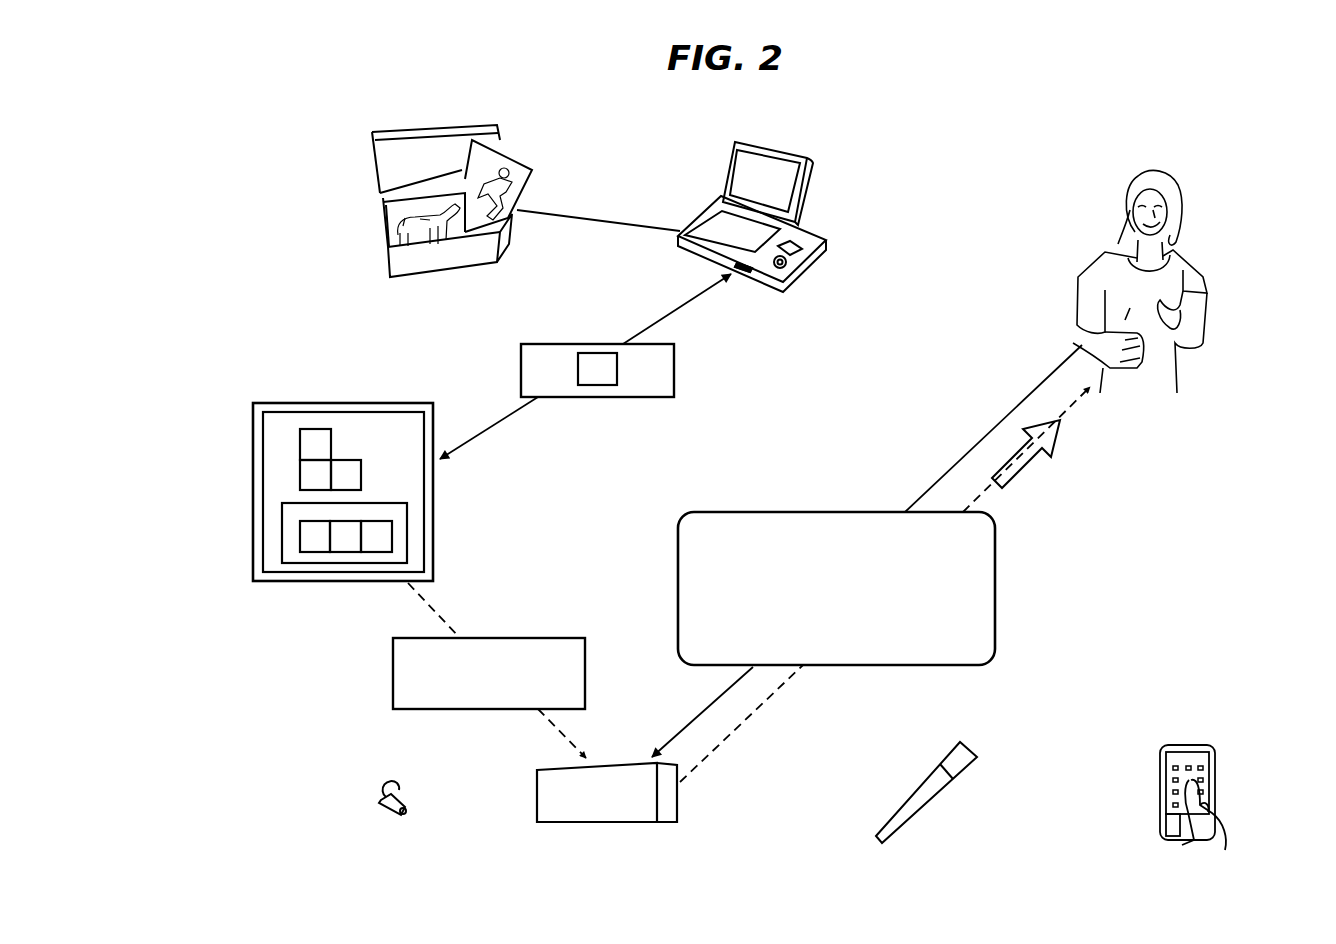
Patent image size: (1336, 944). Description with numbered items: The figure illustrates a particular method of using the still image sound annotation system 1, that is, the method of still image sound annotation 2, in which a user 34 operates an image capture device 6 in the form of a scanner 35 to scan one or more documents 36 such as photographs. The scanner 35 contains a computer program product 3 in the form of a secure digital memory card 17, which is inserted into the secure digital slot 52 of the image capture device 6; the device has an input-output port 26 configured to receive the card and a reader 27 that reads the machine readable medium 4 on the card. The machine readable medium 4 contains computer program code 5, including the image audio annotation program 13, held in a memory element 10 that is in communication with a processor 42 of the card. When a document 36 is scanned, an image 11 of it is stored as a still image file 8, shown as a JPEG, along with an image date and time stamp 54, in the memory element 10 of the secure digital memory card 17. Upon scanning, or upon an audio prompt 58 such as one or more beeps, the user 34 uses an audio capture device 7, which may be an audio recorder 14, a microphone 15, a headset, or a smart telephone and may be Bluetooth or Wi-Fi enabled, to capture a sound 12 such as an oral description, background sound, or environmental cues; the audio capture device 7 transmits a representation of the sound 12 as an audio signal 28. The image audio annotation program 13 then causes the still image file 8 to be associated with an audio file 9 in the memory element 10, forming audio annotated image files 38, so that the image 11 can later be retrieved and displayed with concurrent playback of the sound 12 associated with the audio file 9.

The document 36 is at (525, 168).
The image capture device 6 is at (741, 217).
The scanner 35 is at (706, 232).
The input-output port 26 is at (780, 310).
The reader 27 is at (780, 310).
The secure digital slot 52 is at (750, 272).
The user 34 is at (1132, 183).
The still image sound annotation system 1 is at (1262, 159).
The method of still image sound annotation 2 is at (1279, 171).
The computer program product 3 is at (336, 492).
The secure digital memory card 17 is at (336, 492).
The machine readable medium 4 is at (430, 498).
The memory element 10 is at (389, 533).
The processor 42 is at (315, 444).
The computer program code 5 is at (315, 475).
The image audio annotation program 13 is at (346, 475).
The still image file 8 is at (315, 536).
The audio annotated image files 38 is at (345, 536).
The audio file 9 is at (376, 536).
The image 11 is at (597, 370).
The image date and time stamp 54 is at (597, 369).
The audio signal 28 is at (489, 673).
The sound 12 is at (836, 588).
The audio prompt 58 is at (1026, 454).
The audio recorder 14 is at (607, 792).
The audio capture device 7 is at (408, 803).
The microphone 15 is at (975, 748).